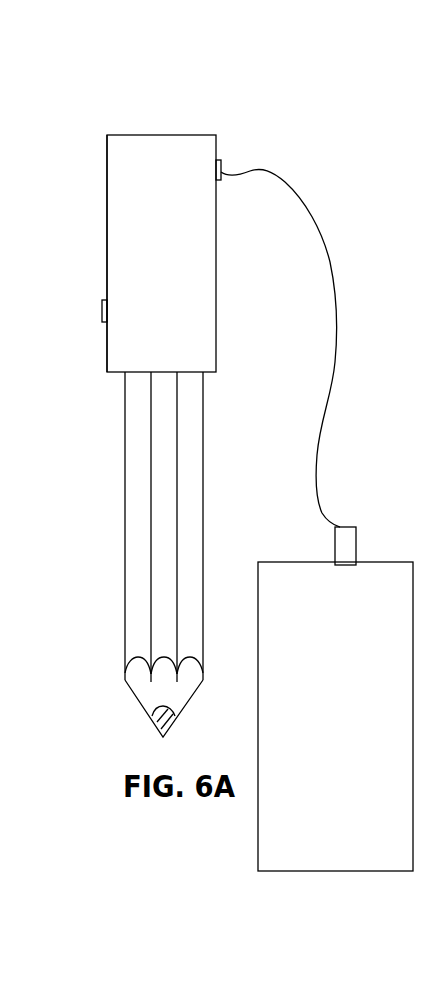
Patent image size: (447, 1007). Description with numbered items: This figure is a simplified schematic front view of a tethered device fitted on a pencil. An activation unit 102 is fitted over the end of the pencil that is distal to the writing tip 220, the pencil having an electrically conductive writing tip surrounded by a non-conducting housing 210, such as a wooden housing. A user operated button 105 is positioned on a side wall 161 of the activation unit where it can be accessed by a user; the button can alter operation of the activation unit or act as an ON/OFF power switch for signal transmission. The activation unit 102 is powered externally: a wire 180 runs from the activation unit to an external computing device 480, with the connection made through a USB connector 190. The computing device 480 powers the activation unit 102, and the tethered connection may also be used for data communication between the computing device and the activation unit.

The activation unit 102 is at (123, 101).
The side wall 161 is at (107, 228).
The button 105 is at (102, 305).
The housing 210 is at (125, 505).
The writing tip 220 is at (157, 726).
The wire 180 is at (327, 247).
The USB connector 190 is at (359, 537).
The external computing device 480 is at (335, 872).